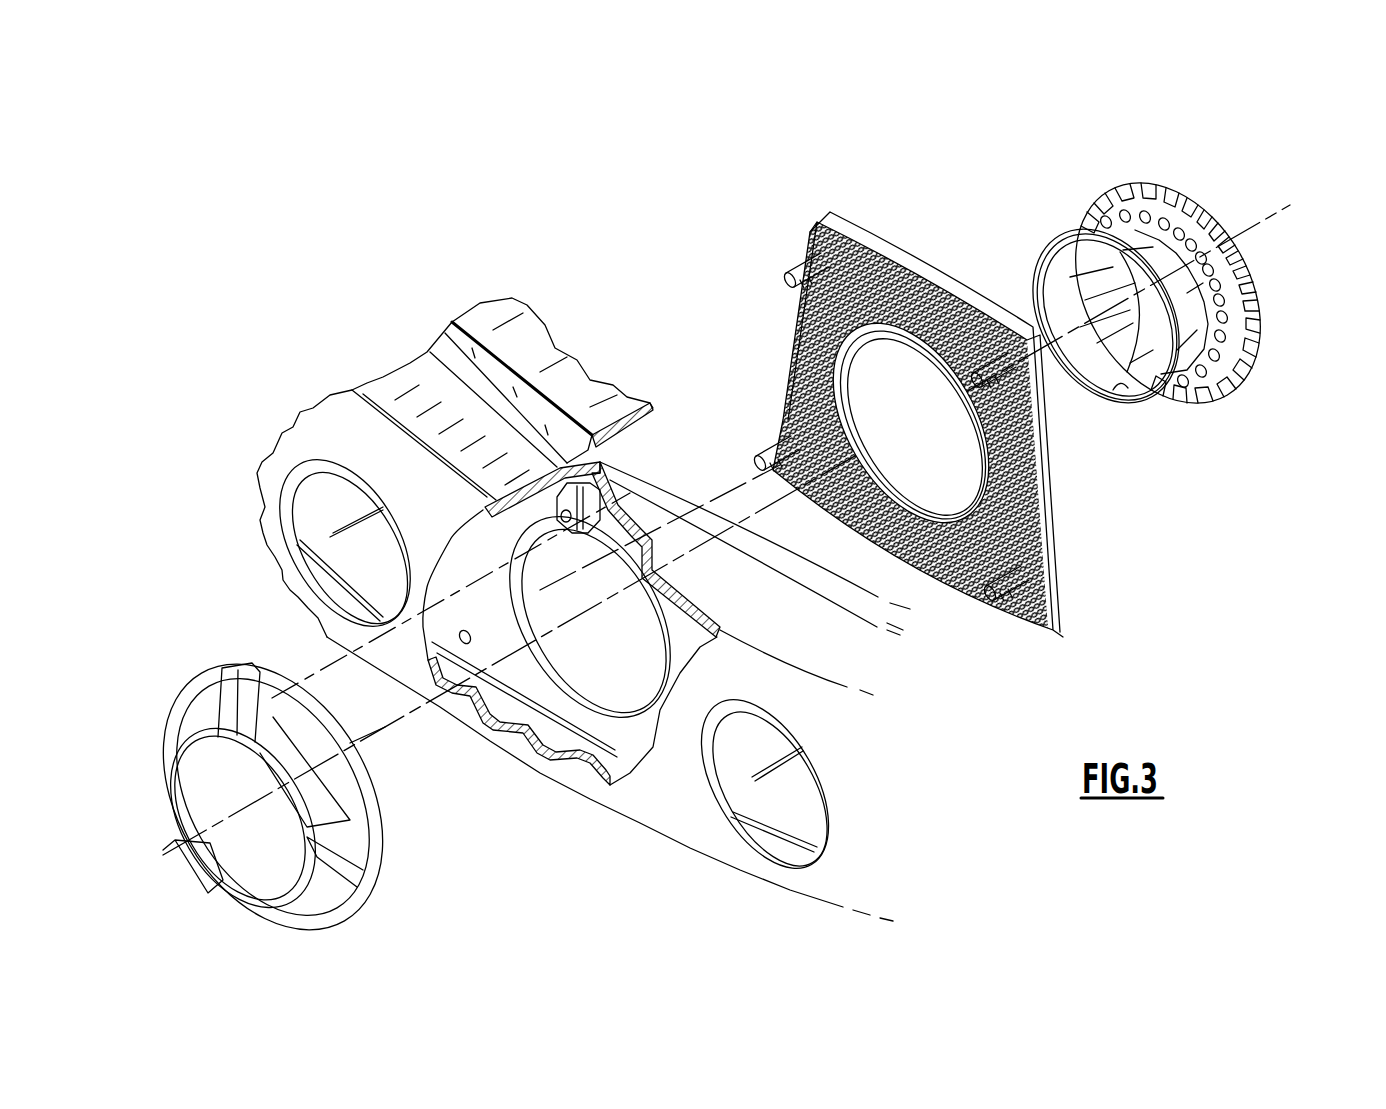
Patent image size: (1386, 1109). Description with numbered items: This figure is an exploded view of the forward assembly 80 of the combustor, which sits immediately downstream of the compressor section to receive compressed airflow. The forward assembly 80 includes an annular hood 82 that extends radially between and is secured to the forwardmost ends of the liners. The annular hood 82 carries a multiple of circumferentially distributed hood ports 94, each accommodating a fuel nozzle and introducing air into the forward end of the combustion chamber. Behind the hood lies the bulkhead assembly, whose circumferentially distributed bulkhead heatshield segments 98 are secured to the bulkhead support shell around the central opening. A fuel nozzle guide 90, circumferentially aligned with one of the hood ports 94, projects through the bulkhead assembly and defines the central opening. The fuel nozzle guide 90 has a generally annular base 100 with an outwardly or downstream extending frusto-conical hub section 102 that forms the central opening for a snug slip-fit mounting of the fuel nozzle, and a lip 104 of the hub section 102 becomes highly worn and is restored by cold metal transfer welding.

The forward assembly 80 is at (636, 184).
The annular hood 82 is at (313, 440).
The hood ports 94 is at (283, 555).
The bulkhead heatshield segments 98 is at (890, 231).
The fuel nozzle guide 90 is at (1205, 190).
The annular base 100 is at (1260, 323).
The hub section 102 is at (1158, 403).
The lip 104 is at (1120, 388).